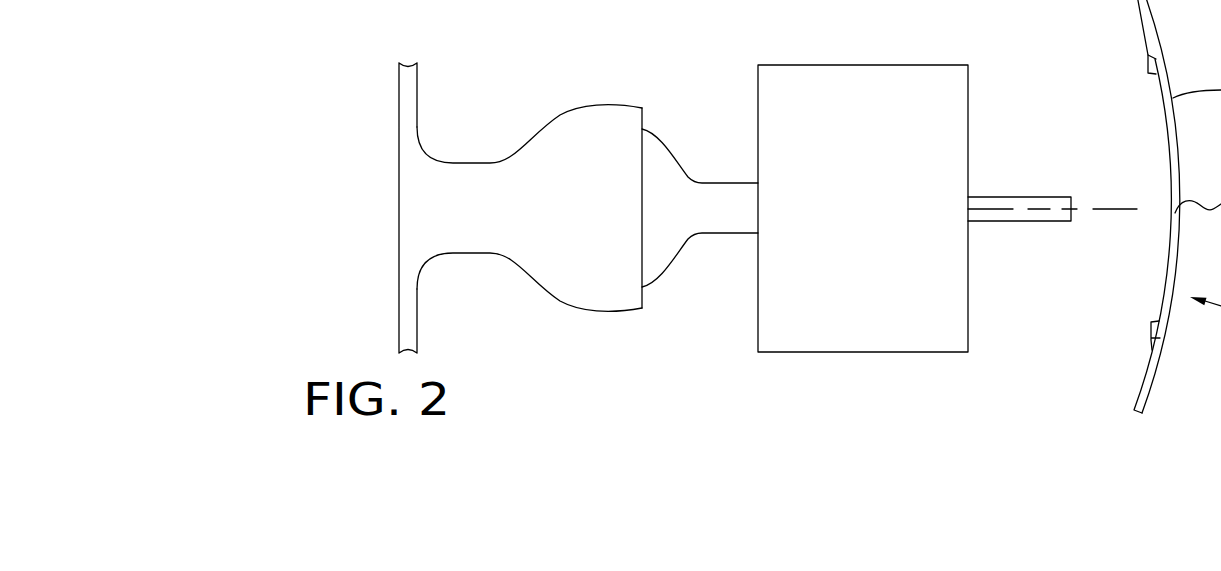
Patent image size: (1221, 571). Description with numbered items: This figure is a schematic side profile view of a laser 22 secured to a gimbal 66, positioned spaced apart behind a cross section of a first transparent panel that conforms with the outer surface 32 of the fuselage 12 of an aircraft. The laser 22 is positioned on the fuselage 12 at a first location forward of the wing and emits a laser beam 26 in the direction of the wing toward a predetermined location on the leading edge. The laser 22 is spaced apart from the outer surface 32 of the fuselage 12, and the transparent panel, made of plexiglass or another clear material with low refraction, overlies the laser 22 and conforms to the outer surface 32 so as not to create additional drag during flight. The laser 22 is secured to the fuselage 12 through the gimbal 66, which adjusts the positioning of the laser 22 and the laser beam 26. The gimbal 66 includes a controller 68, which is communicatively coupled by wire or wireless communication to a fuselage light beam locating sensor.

The fuselage 12 is at (1145, 14).
The outer surface 32 is at (1155, 25).
The laser beam 26 is at (1113, 209).
The laser 22 is at (903, 287).
The gimbal 66 is at (632, 341).
The controller 68 is at (479, 214).